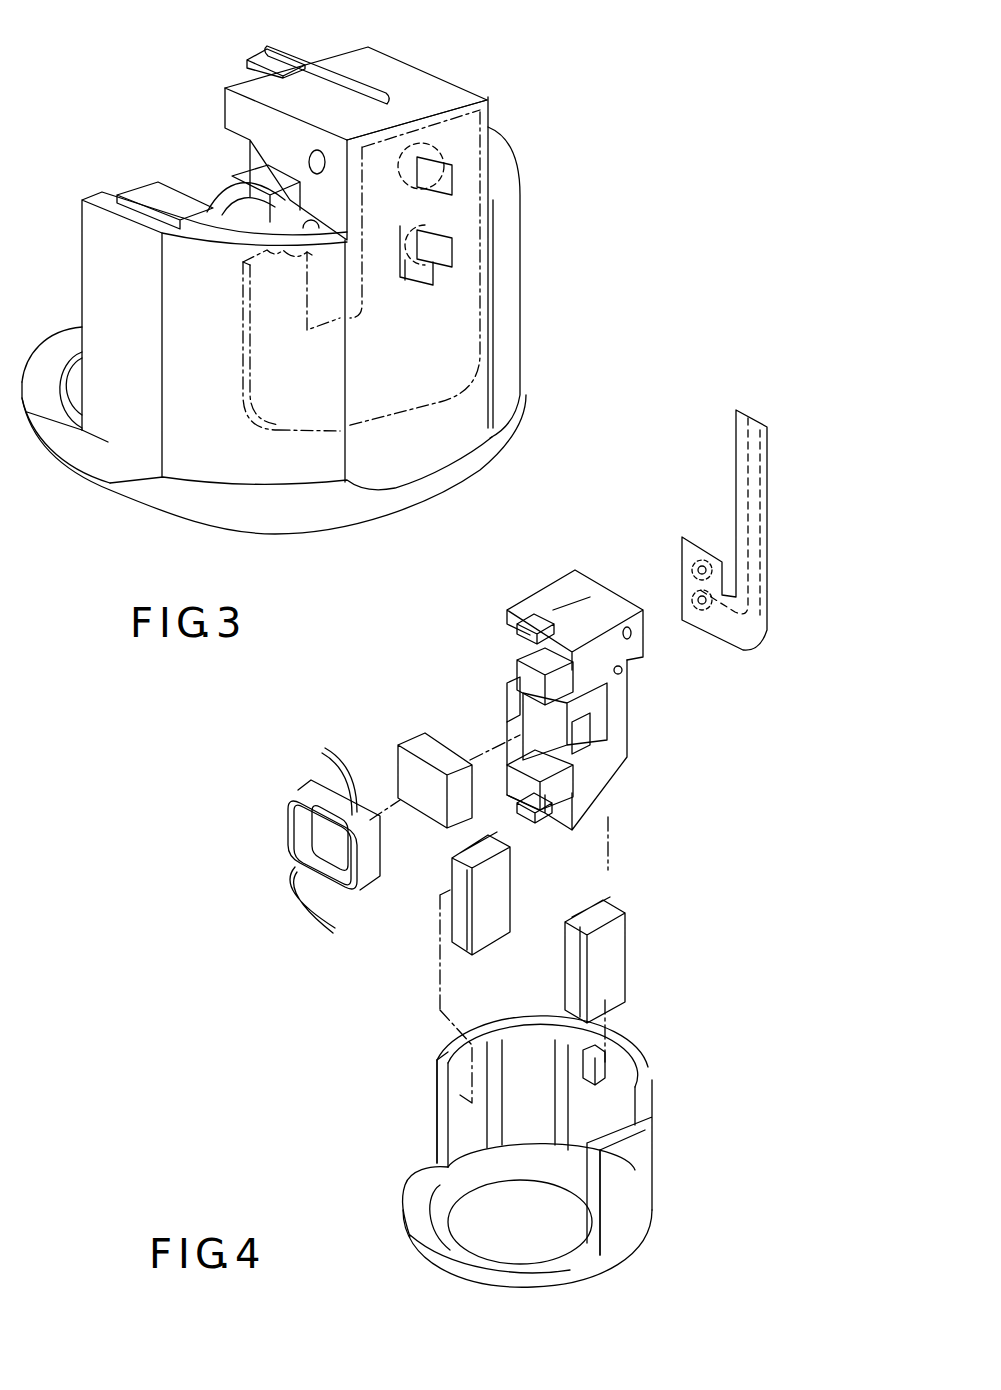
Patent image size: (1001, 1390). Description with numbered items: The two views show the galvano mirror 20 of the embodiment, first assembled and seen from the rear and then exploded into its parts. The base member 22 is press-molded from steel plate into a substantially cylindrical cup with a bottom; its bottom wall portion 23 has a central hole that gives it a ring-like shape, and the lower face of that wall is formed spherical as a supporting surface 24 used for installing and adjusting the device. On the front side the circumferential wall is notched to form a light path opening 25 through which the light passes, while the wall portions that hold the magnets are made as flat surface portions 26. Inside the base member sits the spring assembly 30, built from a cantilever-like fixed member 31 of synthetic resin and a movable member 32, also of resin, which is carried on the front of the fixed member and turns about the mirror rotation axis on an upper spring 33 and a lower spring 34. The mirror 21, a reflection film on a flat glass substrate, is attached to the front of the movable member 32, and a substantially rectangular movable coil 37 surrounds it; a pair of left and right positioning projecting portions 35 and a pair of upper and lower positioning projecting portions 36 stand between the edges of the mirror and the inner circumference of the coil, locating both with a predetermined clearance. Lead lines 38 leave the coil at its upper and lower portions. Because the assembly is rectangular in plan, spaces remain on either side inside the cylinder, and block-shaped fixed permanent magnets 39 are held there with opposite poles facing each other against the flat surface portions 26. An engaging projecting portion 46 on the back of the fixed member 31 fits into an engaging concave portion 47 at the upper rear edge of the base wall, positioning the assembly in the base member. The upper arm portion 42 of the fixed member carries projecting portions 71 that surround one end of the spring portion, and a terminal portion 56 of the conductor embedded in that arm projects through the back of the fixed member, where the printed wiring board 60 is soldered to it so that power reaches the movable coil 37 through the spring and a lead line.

In FIG. 4, the motor unit 20 is at (723, 830).
In FIG. 4, the mirror 21 is at (410, 735).
In FIG. 3, the base member 22 is at (520, 402).
In FIG. 4, the base member 22 is at (655, 1182).
In FIG. 4, the bottom wall portion 23 is at (440, 1215).
In FIG. 3, the supporting surface 24 is at (237, 505).
In FIG. 4, the supporting surface 24 is at (483, 1280).
In FIG. 3, the light path opening 25 is at (65, 315).
In FIG. 4, the light path opening 25 is at (408, 1190).
In FIG. 3, the flat surface portions 26 is at (117, 397).
In FIG. 4, the flat surface portions 26 is at (440, 1115).
In FIG. 3, the spring assembly 30 is at (448, 57).
In FIG. 4, the spring assembly 30 is at (603, 560).
In FIG. 3, the fixed member 31 is at (493, 163).
In FIG. 4, the fixed member 31 is at (627, 745).
In FIG. 4, the movable member 32 is at (585, 698).
In FIG. 3, the upper spring 33 is at (347, 72).
In FIG. 4, the upper spring 33 is at (512, 640).
In FIG. 4, the lower spring 34 is at (525, 822).
In FIG. 4, the left and right positioning projecting portions 35 is at (505, 700).
In FIG. 4, the upper and lower positioning projecting portions 36 is at (625, 664).
In FIG. 3, the movable coil 37 is at (222, 195).
In FIG. 4, the movable coil 37 is at (355, 895).
In FIG. 4, the lead lines 38 is at (345, 757).
In FIG. 3, the fixed permanent magnets 39 is at (150, 193).
In FIG. 4, the fixed permanent magnets 39 is at (490, 950).
In FIG. 3, the arm portion 42 is at (385, 60).
In FIG. 3, the engaging projecting portion 46 is at (433, 270).
In FIG. 3, the engaging concave portion 47 is at (405, 282).
In FIG. 4, the engaging concave portion 47 is at (612, 1055).
In FIG. 3, the terminal portion 56 is at (447, 165).
In FIG. 3, the printed wiring board 60 is at (475, 360).
In FIG. 4, the printed wiring board 60 is at (768, 585).
In FIG. 3, the projecting portions 71 is at (262, 60).